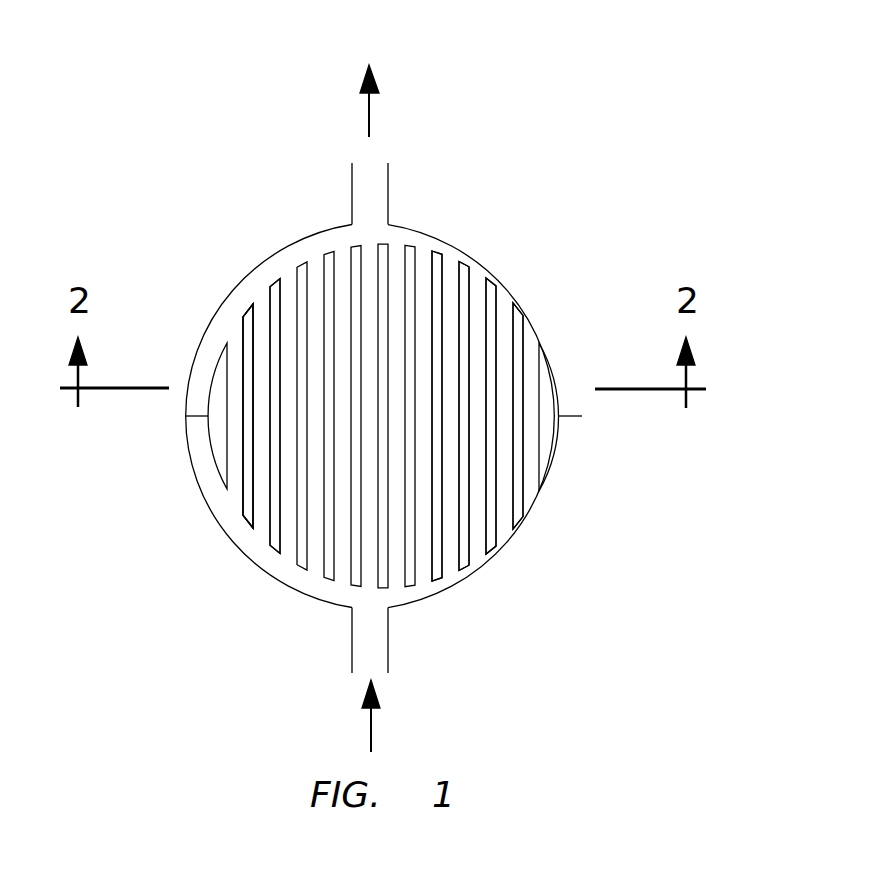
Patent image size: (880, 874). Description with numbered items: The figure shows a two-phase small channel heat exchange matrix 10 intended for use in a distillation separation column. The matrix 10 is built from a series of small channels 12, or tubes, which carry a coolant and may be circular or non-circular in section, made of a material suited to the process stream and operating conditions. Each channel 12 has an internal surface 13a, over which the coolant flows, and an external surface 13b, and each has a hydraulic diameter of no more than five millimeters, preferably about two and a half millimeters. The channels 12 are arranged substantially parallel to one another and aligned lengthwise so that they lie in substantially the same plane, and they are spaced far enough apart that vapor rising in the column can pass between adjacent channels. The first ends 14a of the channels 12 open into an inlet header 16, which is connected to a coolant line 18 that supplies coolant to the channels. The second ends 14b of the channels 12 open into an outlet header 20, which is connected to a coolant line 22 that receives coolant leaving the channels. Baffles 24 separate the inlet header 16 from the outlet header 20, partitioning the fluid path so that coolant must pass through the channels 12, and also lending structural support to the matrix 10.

The two-phase small channel heat exchange matrix 10 is at (596, 88).
The small channels 12 is at (422, 289).
The internal surface 13a is at (455, 547).
The external surface 13b is at (438, 565).
The first ends 14a is at (520, 540).
The second ends 14b is at (293, 277).
The inlet header 16 is at (262, 549).
The coolant line 18 is at (352, 654).
The outlet header 20 is at (409, 238).
The coolant line 22 is at (388, 168).
The baffles 24 is at (185, 417).